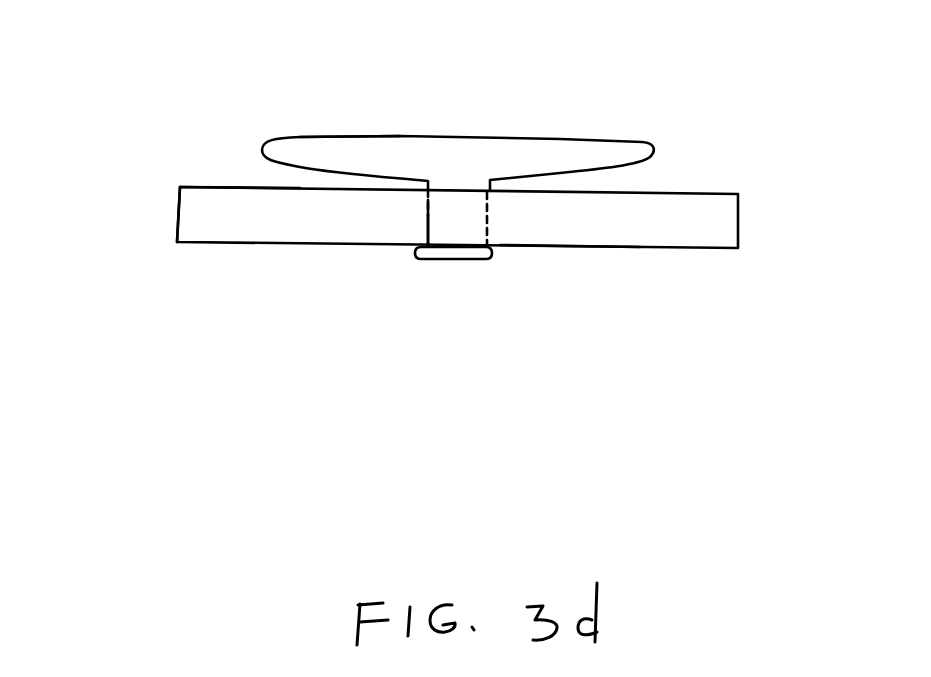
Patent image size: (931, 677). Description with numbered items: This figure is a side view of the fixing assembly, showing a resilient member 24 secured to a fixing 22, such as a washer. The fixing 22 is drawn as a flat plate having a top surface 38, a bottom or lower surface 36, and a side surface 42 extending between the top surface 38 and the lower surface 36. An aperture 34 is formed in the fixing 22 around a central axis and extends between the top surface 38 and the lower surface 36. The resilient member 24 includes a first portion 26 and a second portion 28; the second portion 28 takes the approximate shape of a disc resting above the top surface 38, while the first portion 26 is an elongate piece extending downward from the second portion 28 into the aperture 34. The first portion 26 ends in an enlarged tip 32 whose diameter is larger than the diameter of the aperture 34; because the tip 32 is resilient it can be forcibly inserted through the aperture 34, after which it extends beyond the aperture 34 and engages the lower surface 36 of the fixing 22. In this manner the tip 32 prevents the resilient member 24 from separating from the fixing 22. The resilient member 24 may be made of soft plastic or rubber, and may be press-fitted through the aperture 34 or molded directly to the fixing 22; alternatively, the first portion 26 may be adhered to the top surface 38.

The fixing 22 is at (712, 227).
The resilient member 24 is at (470, 137).
The first portion 26 is at (453, 222).
The second portion 28 is at (358, 153).
The tip 32 is at (415, 257).
The aperture 34 is at (428, 214).
The lower surface 36 is at (547, 252).
The top surface 38 is at (212, 186).
The side surface 42 is at (172, 213).